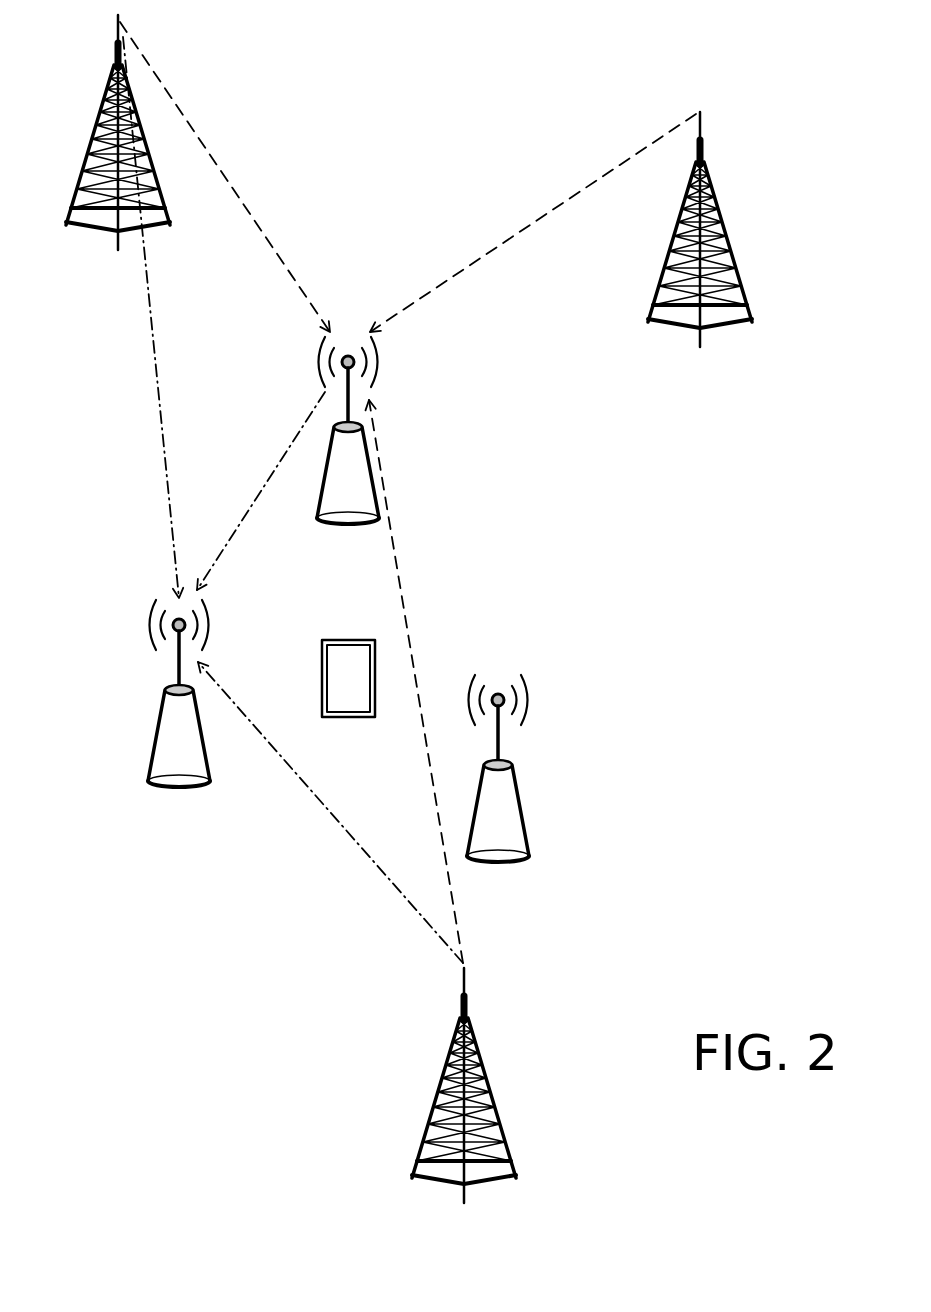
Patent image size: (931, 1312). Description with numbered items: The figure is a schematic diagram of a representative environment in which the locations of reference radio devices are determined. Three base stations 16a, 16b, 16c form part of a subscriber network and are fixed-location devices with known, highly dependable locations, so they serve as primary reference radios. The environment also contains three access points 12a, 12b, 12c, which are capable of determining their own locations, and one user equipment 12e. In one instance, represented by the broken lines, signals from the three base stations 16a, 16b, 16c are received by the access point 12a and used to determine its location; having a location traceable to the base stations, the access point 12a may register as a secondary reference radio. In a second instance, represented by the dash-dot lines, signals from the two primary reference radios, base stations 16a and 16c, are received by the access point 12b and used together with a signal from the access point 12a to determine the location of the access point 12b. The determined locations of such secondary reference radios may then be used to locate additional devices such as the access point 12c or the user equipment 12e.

The base station 16a is at (118, 236).
The base station 16b is at (700, 325).
The base station 16c is at (478, 1053).
The access point 12a is at (330, 500).
The access point 12b is at (168, 745).
The access point 12c is at (507, 830).
The user equipment 12e is at (347, 703).